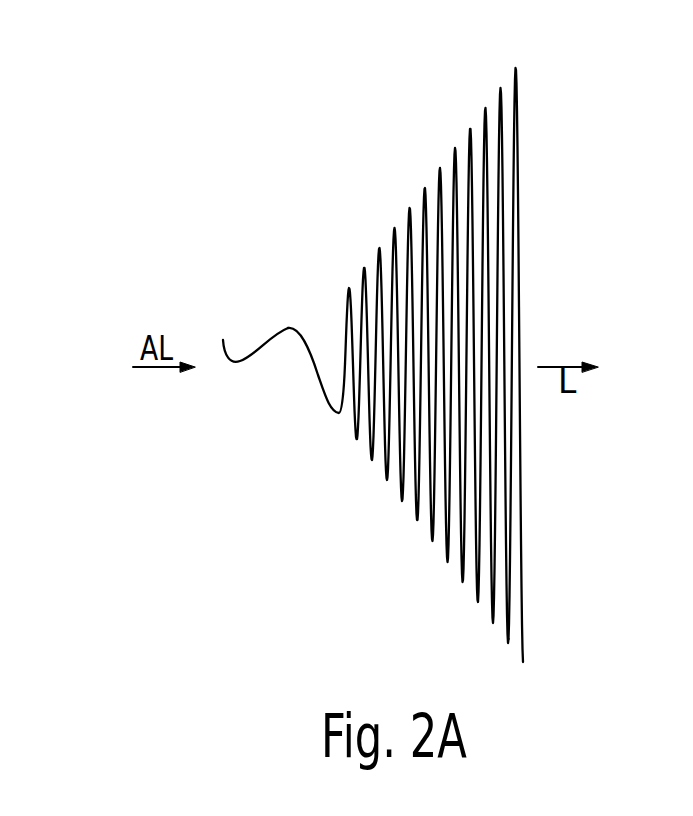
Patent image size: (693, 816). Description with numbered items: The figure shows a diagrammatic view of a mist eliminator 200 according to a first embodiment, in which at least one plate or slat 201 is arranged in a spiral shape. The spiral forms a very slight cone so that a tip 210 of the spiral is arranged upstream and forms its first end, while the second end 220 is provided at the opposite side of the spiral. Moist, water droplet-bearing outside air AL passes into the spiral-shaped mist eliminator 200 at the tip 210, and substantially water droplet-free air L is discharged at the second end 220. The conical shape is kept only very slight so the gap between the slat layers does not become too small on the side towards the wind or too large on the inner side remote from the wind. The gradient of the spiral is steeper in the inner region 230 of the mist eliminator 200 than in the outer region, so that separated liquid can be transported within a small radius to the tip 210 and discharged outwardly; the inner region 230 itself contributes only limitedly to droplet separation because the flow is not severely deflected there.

The mist eliminator 200 is at (361, 125).
The plate or slat 201 is at (393, 239).
The tip 210 is at (235, 365).
The second end 220 is at (520, 292).
The inner region 230 is at (322, 388).